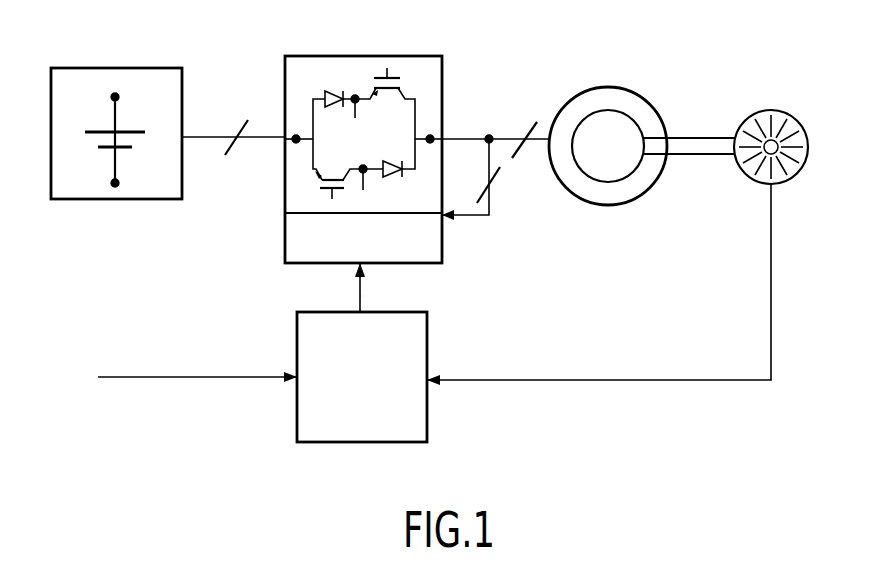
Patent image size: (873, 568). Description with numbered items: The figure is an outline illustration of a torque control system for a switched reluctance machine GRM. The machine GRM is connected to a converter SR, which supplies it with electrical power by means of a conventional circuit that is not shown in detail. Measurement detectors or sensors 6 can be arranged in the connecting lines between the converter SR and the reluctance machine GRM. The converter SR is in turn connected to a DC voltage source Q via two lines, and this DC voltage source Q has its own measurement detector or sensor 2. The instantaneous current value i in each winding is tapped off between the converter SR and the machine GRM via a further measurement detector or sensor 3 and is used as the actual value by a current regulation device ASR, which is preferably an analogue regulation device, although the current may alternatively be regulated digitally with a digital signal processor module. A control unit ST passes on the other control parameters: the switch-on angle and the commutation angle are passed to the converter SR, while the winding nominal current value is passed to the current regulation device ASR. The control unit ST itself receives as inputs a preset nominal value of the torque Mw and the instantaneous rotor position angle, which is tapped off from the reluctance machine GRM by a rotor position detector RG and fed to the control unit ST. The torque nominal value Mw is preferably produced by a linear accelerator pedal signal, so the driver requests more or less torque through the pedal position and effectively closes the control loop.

The DC voltage source Q is at (58, 88).
The measurement detector or sensor 2 is at (246, 126).
The converter SR is at (290, 60).
The current regulation device ASR is at (294, 244).
The measurement detectors or sensors 6 is at (537, 123).
The measurement detector or sensor 3 is at (492, 199).
The instantaneous current value i is at (489, 215).
The switched reluctance machine GRM is at (599, 98).
The rotor position detector RG is at (798, 172).
The control unit ST is at (305, 341).
The preset nominal value of the torque Mw is at (180, 377).